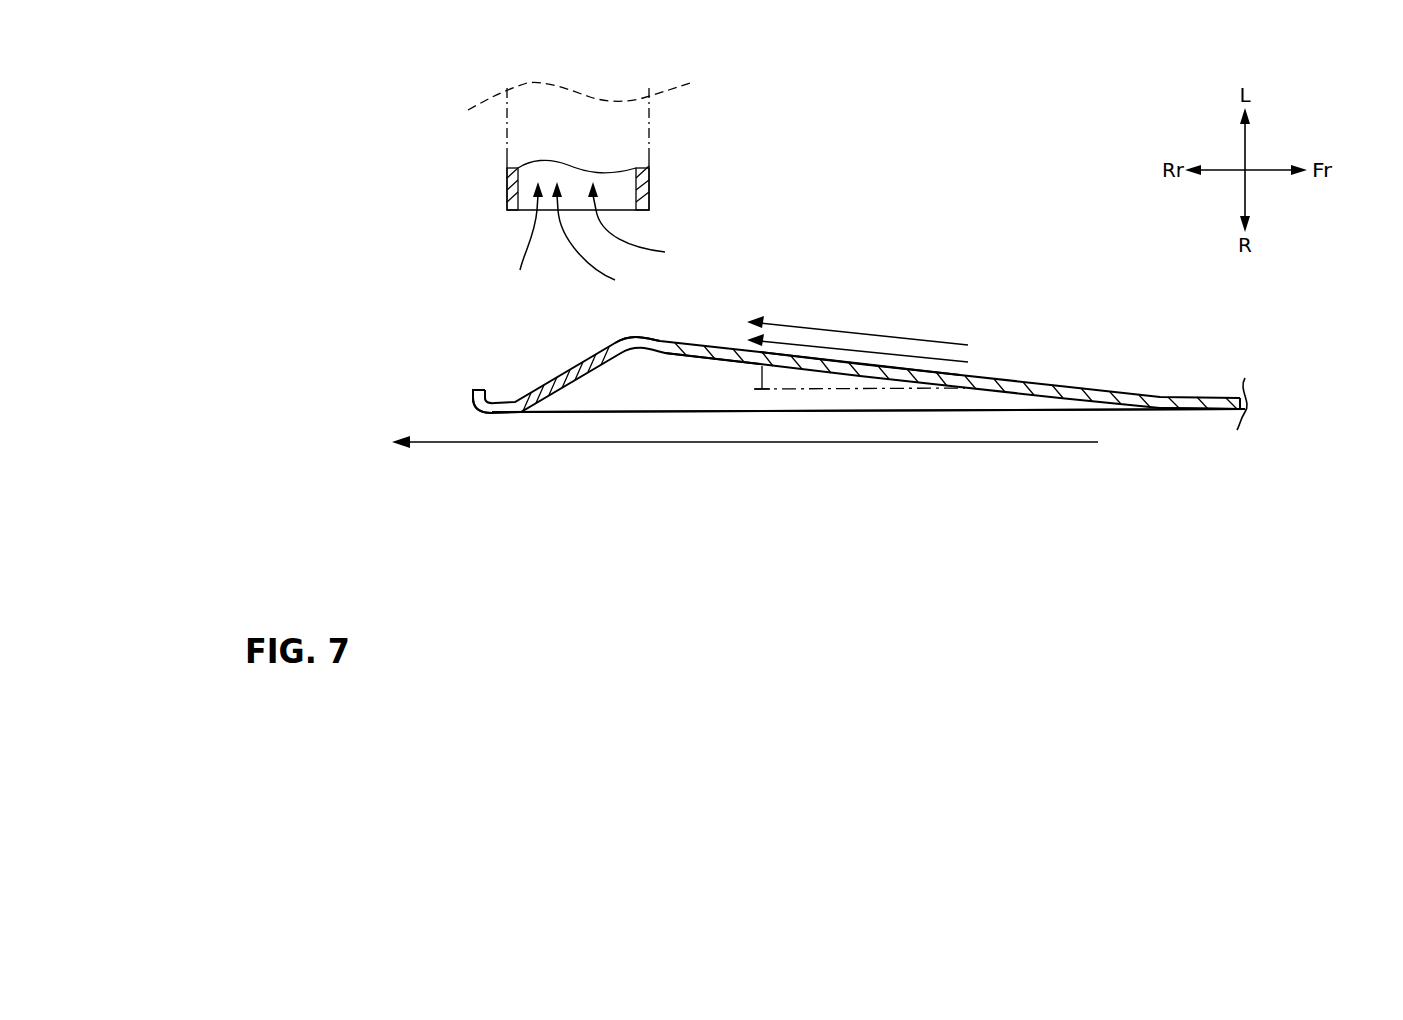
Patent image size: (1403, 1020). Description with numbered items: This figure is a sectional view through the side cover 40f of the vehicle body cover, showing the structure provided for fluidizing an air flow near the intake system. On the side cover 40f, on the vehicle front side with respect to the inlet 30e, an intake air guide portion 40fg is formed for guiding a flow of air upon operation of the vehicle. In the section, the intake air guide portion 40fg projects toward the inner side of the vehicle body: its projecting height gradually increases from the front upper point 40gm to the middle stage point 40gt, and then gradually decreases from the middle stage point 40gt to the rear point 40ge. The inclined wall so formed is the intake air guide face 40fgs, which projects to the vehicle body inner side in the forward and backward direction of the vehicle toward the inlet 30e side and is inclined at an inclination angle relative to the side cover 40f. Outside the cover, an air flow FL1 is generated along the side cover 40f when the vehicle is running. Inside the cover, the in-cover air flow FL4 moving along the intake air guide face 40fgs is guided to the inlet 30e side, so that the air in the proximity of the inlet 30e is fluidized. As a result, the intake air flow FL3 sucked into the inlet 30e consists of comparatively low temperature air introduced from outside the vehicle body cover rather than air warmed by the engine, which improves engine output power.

The inlet 30e is at (622, 210).
The intake air flow FL3 is at (560, 247).
The in-cover air flow FL4 is at (813, 318).
The intake air guide face 40fgs is at (887, 352).
The middle stage point 40gt is at (648, 355).
The intake air guide portion 40fg is at (682, 392).
The air flow FL1 is at (847, 442).
The rear point 40ge is at (503, 414).
The side cover 40f is at (560, 414).
The front upper point 40gm is at (1180, 410).